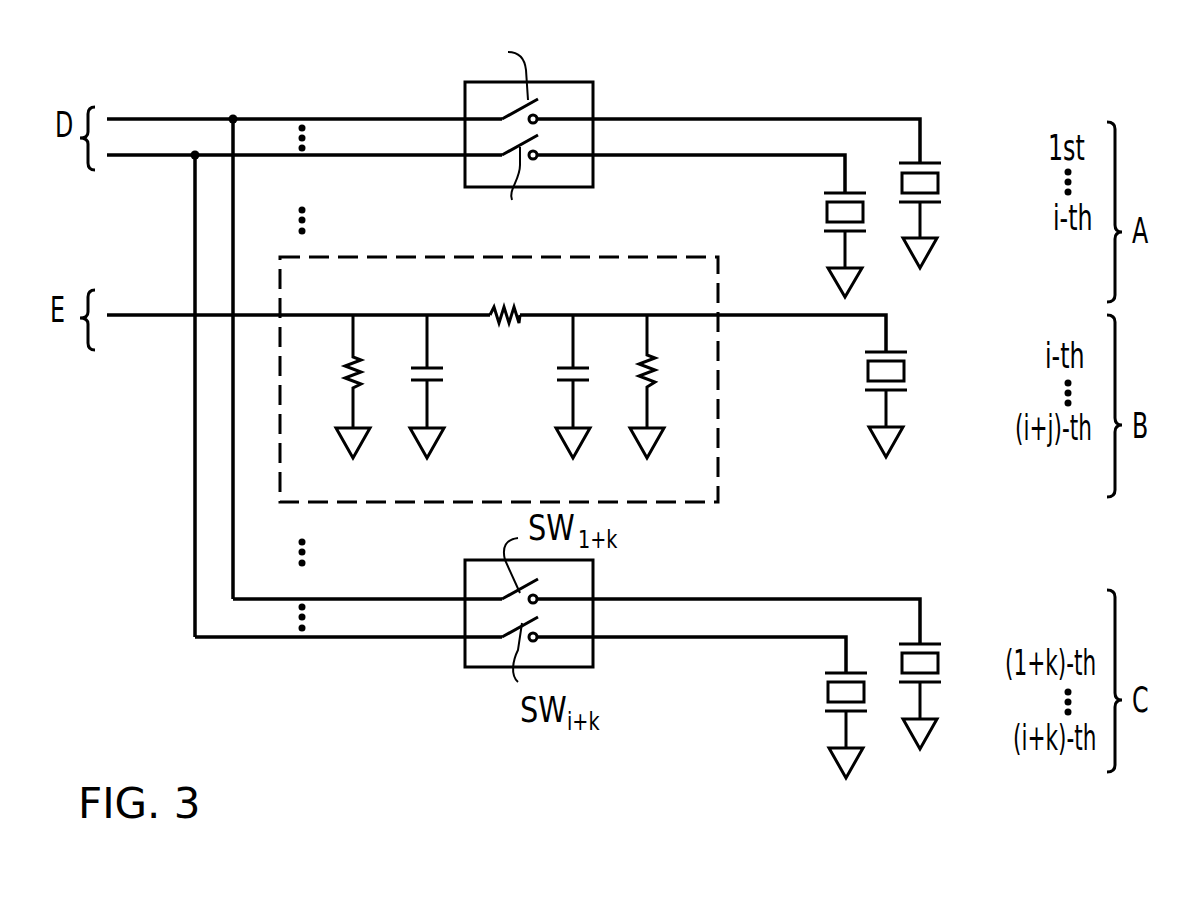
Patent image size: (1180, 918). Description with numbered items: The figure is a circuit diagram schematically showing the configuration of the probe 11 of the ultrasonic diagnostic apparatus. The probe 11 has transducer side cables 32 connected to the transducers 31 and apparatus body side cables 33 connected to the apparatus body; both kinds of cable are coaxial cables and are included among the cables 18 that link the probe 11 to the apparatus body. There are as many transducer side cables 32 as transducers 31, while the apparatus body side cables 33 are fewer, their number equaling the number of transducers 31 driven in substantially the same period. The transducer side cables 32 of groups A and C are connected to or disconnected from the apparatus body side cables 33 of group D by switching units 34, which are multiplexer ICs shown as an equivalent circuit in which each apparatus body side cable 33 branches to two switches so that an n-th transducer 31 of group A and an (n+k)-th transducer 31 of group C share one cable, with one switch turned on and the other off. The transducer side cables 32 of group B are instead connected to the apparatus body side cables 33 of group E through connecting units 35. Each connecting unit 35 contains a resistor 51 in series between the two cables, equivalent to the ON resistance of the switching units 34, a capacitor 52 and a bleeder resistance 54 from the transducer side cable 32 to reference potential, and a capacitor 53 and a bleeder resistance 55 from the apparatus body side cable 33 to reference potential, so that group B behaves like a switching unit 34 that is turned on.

The probe 11 is at (228, 718).
The cables 18 is at (138, 418).
The transducer 31 is at (902, 183).
The transducer side cable 32 is at (740, 118).
The apparatus body side cable 33 is at (142, 118).
The switching unit 34 is at (596, 62).
The connecting unit 35 is at (513, 350).
The resistor 51 is at (496, 306).
The capacitor 52 is at (566, 368).
The capacitor 53 is at (447, 375).
The bleeder resistance 54 is at (657, 360).
The bleeder resistance 55 is at (350, 368).